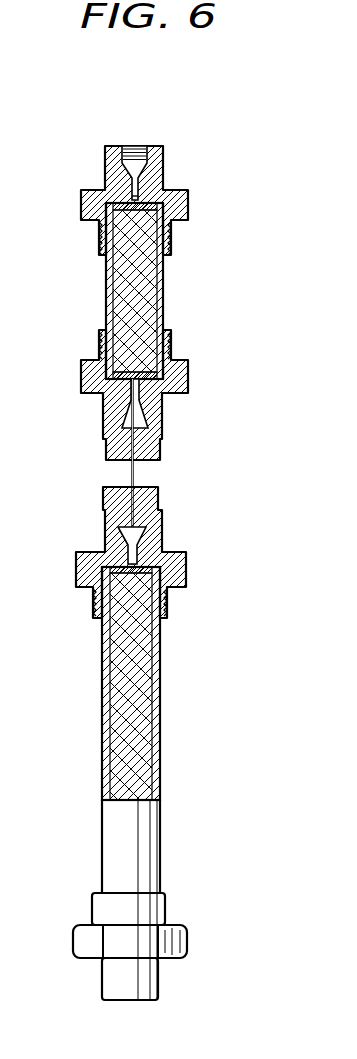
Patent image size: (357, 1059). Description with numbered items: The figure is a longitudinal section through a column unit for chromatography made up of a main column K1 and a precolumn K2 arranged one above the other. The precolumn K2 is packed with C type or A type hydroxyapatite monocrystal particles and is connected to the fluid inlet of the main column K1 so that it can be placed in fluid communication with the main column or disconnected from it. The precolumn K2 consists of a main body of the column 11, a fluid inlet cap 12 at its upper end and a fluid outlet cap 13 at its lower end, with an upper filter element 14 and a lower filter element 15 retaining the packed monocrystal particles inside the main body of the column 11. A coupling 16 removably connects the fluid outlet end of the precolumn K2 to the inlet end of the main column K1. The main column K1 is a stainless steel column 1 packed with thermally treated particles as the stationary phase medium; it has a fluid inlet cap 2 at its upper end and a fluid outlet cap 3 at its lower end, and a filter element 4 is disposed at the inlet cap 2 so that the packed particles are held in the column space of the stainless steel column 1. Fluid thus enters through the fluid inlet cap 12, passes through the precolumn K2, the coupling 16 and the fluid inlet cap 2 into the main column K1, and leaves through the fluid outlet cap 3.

The precolumn K2 is at (86, 289).
The main column K1 is at (88, 732).
The fluid inlet cap 12 is at (157, 181).
The upper filter element 14 is at (107, 240).
The main body of the column 11 is at (163, 276).
The lower filter element 15 is at (103, 349).
The fluid outlet cap 13 is at (162, 410).
The coupling 16 is at (136, 462).
The fluid inlet cap 2 is at (162, 529).
The filter element 4 is at (103, 620).
The stainless steel column 1 is at (160, 681).
The fluid outlet cap 3 is at (156, 983).